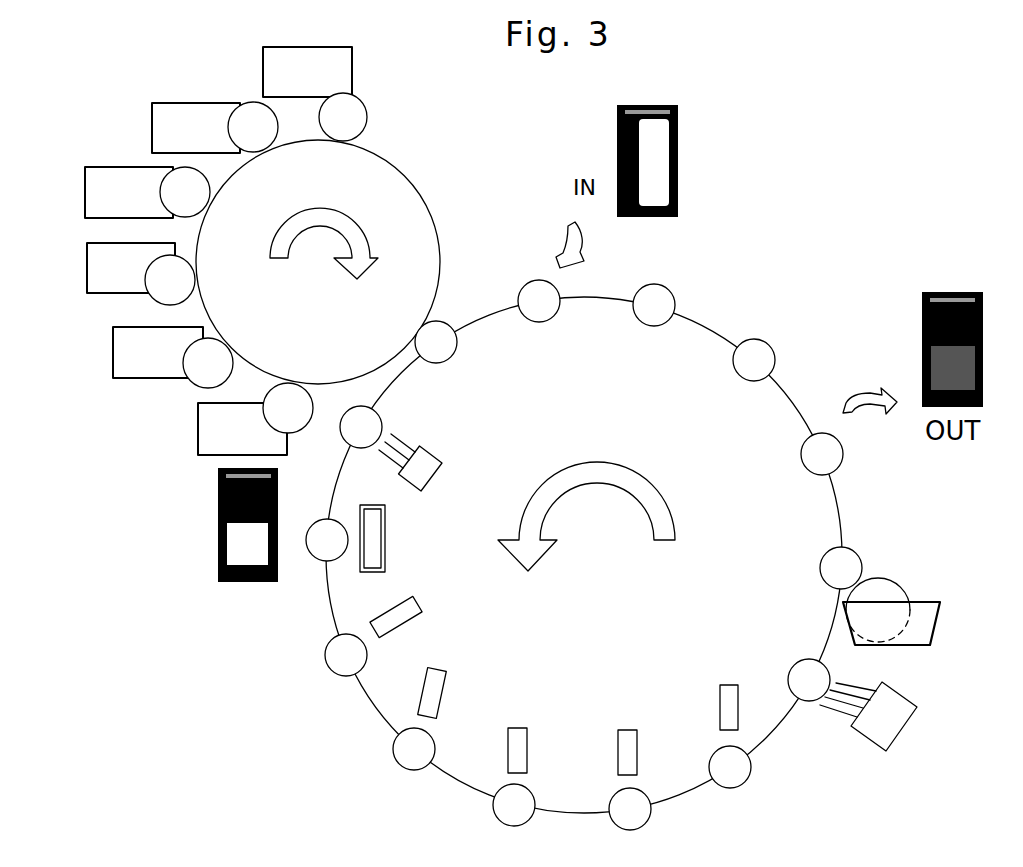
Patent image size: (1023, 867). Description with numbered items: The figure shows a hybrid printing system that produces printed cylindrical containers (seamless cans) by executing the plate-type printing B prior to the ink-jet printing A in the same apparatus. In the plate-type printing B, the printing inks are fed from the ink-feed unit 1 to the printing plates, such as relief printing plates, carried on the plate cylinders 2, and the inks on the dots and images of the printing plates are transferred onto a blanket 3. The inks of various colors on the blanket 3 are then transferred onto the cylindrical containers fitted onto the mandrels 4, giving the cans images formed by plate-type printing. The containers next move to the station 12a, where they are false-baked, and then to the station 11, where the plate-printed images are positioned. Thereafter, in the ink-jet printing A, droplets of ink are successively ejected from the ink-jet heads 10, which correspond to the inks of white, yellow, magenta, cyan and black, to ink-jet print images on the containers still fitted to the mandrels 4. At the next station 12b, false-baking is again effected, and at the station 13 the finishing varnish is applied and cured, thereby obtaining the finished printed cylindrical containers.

The ink-feed unit 1 is at (335, 73).
The plate cylinders 2 is at (355, 118).
The blanket 3 is at (417, 193).
The mandrels 4 is at (395, 750).
The ink-jet heads 10 is at (574, 682).
The station 11 is at (372, 535).
The station 12a is at (430, 450).
The station 12b is at (907, 697).
The station 13 is at (930, 592).
The ink-jet printing A is at (831, 759).
The plate-type printing B is at (118, 100).